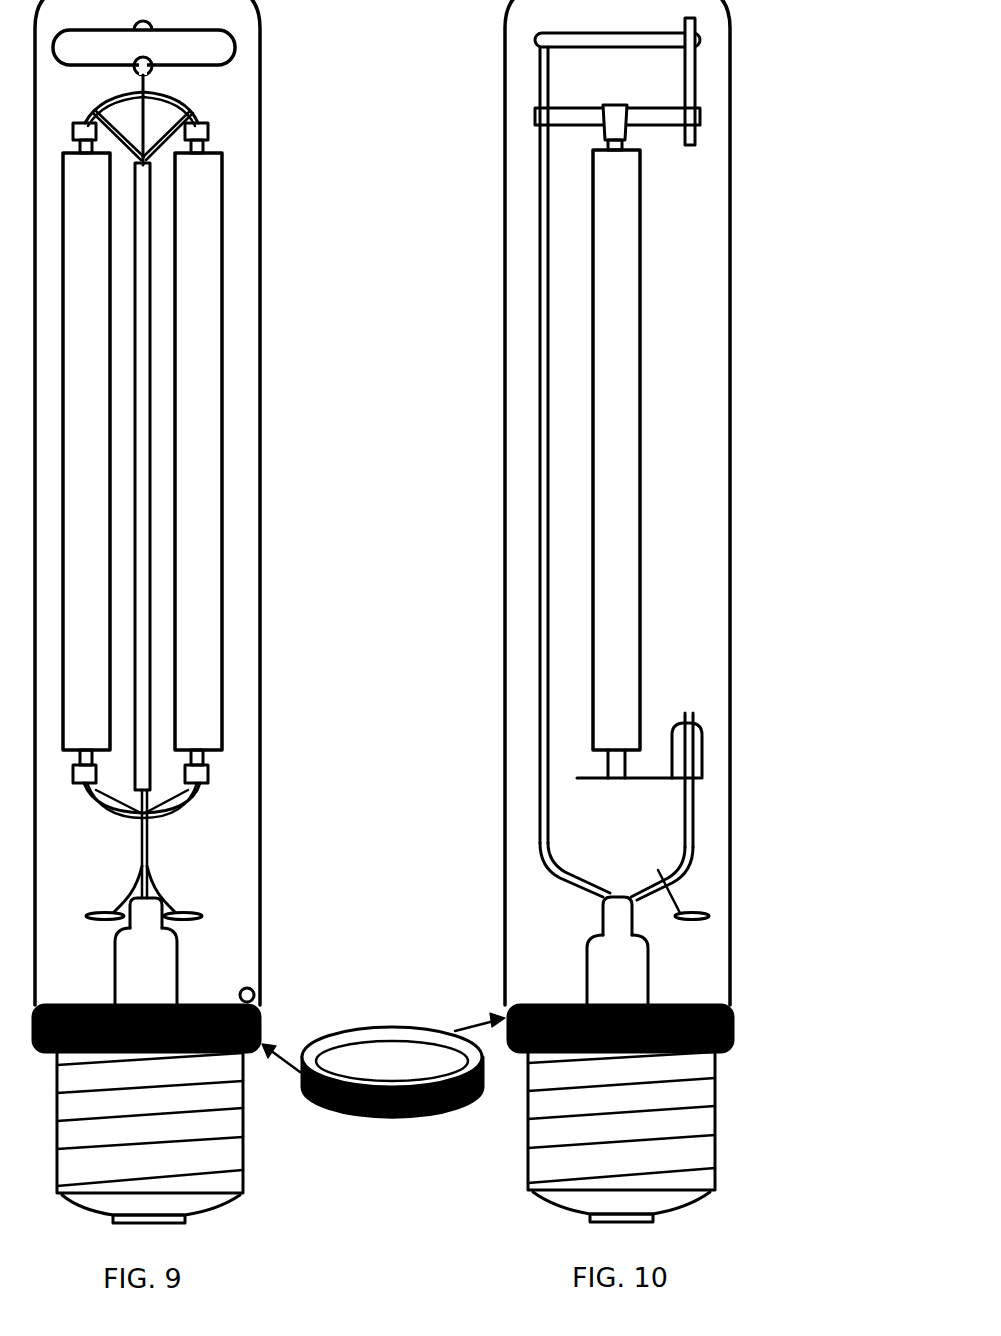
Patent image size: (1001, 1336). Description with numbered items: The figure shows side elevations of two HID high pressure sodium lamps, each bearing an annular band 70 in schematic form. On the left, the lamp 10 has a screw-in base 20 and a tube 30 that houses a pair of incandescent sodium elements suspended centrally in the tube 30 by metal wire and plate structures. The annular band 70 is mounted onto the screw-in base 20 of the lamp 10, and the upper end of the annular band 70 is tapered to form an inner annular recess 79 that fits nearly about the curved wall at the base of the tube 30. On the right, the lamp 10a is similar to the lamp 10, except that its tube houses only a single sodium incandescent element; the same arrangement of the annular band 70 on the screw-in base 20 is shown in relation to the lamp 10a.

In FIG. 9, the lamp 10 is at (248, 632).
In FIG. 10, the lamp 10a is at (513, 520).
In FIG. 9, the screw-in base 20 is at (232, 1125).
In FIG. 9, the tube 30 is at (260, 866).
In FIG. 9, the annular band 70 is at (395, 1036).
In FIG. 9, the inner annular recess 79 is at (254, 994).